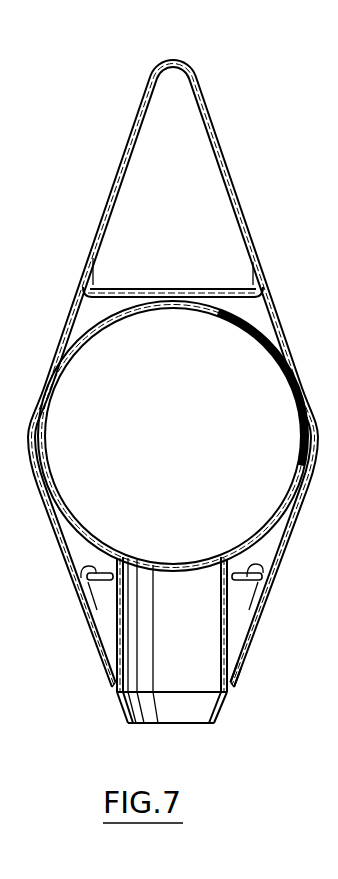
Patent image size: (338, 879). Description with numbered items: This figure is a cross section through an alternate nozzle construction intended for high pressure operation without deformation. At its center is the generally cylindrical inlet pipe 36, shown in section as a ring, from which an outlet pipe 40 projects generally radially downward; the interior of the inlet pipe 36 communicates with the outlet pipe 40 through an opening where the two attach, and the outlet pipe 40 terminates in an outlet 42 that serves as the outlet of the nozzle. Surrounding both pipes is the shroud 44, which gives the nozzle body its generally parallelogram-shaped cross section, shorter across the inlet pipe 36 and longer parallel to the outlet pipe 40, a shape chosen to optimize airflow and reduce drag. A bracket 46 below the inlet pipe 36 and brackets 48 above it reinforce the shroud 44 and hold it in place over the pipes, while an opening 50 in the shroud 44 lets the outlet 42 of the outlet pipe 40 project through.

The inlet pipe 36 is at (251, 323).
The outlet pipe 40 is at (172, 624).
The outlet 42 is at (202, 751).
The shroud 44 is at (228, 163).
The bracket 46 is at (168, 282).
The bracket 48 is at (53, 576).
The opening 50 is at (231, 690).